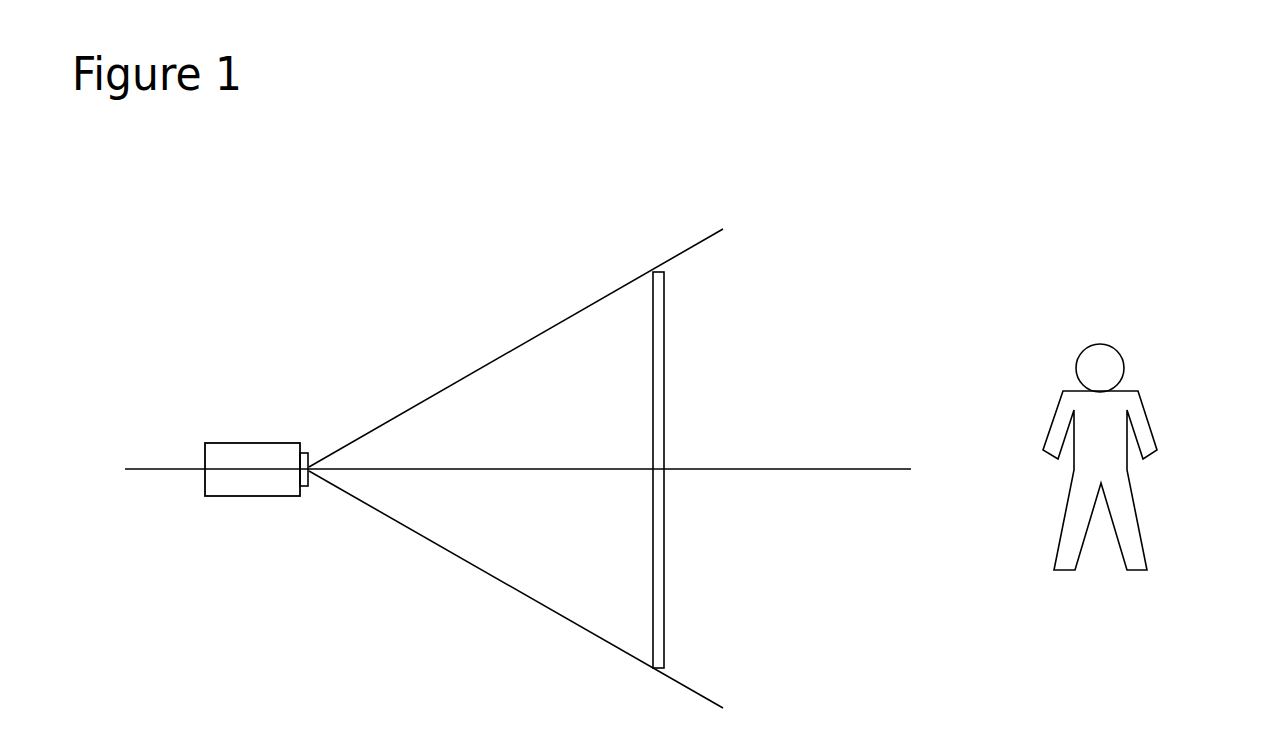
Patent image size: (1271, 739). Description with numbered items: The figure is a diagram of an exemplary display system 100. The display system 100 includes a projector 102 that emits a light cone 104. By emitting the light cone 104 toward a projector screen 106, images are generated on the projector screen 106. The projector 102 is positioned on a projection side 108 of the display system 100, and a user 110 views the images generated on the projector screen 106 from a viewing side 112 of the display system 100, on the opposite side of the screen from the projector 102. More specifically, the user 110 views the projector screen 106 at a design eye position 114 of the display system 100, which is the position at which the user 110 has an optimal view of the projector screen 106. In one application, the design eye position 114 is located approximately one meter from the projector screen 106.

The display system 100 is at (798, 170).
The projector 102 is at (230, 443).
The light cone 104 is at (507, 352).
The projector screen 106 is at (664, 335).
The projection side 108 is at (517, 267).
The user 110 is at (1152, 415).
The viewing side 112 is at (833, 362).
The design eye position 114 is at (1112, 333).